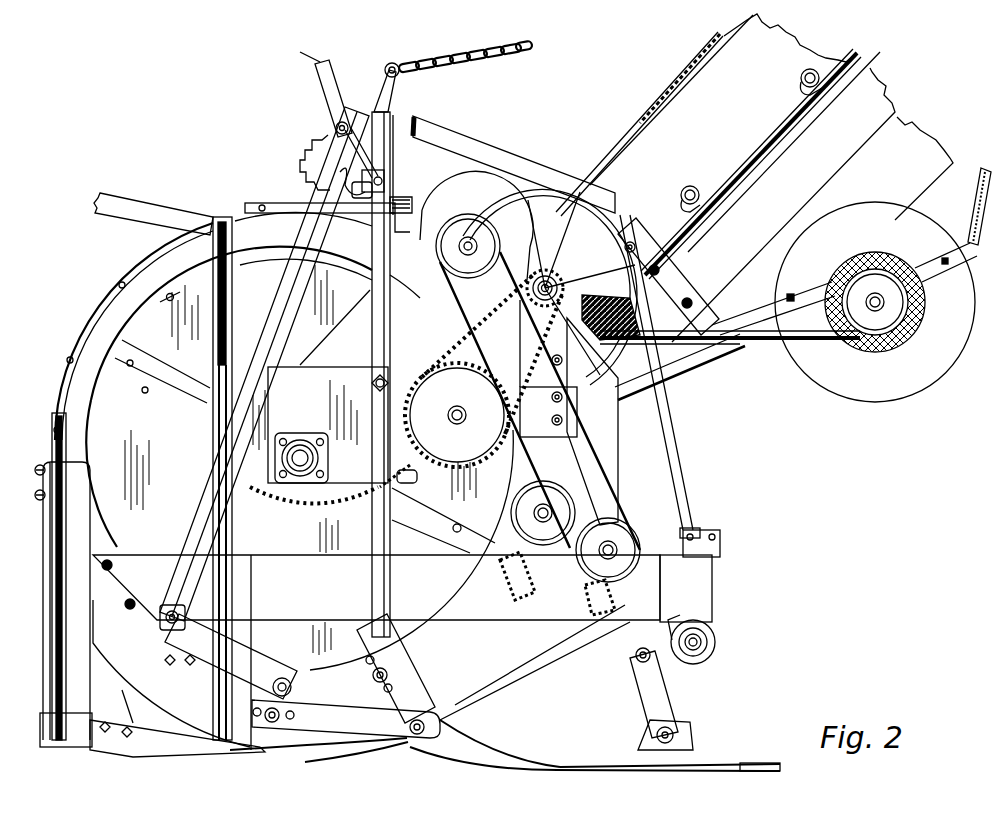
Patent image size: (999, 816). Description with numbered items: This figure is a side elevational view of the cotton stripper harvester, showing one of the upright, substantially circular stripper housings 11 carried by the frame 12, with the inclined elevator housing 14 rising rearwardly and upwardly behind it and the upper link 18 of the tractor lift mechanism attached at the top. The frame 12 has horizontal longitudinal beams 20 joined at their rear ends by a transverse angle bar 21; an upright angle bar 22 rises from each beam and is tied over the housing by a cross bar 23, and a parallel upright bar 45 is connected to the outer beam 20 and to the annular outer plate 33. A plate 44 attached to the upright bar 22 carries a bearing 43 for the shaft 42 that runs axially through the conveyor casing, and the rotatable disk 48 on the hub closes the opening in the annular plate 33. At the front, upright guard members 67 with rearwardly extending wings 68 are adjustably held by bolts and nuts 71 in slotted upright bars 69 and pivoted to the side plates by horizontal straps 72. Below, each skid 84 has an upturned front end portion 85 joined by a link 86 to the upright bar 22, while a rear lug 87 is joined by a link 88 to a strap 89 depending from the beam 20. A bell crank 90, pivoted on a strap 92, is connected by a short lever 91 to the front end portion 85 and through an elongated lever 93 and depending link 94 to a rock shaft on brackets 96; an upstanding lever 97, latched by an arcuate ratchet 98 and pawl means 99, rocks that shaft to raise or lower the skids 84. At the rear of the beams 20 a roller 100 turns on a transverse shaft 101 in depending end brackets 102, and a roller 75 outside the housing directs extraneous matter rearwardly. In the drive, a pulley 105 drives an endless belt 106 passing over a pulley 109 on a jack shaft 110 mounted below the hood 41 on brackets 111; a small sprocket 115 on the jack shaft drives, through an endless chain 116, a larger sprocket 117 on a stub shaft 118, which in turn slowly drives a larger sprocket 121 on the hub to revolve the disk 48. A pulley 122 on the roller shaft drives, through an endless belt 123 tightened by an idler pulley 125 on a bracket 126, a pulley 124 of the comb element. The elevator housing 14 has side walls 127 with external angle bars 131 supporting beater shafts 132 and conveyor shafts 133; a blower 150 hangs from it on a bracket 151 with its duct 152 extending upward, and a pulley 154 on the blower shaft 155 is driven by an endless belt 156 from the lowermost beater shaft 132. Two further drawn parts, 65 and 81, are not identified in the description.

The stripper housing 11 is at (95, 307).
The frame 12 is at (400, 477).
The elevator housing 14 is at (628, 140).
The upper link 18 is at (175, 200).
The beam 20 is at (150, 622).
The transverse angle bar 21 is at (718, 566).
The upright angle bar 22 is at (372, 272).
The cross bar 23 is at (398, 198).
The annular plate 33 is at (88, 327).
The hood 41 is at (455, 180).
The shaft 42 is at (300, 452).
The bearing 43 is at (330, 465).
The plate 44 is at (305, 365).
The upright bar 45 is at (232, 283).
The disk 48 is at (170, 297).
The shield 65 is at (558, 660).
The guard member 67 is at (45, 583).
The wing 68 is at (125, 685).
The upright bar 69 is at (55, 432).
The bolts and nuts 71 is at (42, 470).
The arm 72 is at (170, 745).
The roller 75 is at (600, 552).
The pulley 81 is at (466, 243).
The skid 84 is at (577, 762).
The front end portion 85 is at (462, 752).
The link 86 is at (405, 668).
The lug 87 is at (695, 745).
The link 88 is at (637, 700).
The strap 89 is at (665, 592).
The bell crank 90 is at (280, 636).
The short lever 91 is at (345, 700).
The strap 92 is at (255, 587).
The elongated lever 93 is at (205, 497).
The depending link 94 is at (350, 190).
The bracket 96 is at (385, 175).
The upstanding lever 97 is at (318, 76).
The arcuate ratchet 98 is at (310, 145).
The pawl means 99 is at (338, 100).
The roller 100 is at (715, 640).
The shaft 101 is at (705, 652).
The end bracket 102 is at (715, 645).
The pulley 105 is at (690, 665).
The endless belt 106 is at (668, 400).
The pulley 109 is at (598, 226).
The jack shaft 110 is at (563, 275).
The bracket 111 is at (572, 372).
The small sprocket 115 is at (540, 278).
The endless chain 116 is at (507, 320).
The larger sprocket 117 is at (470, 470).
The stub shaft 118 is at (459, 420).
The larger sprocket 121 is at (300, 505).
The pulley 122 is at (622, 530).
The endless belt 123 is at (552, 462).
The pulley 124 is at (478, 238).
The idler pulley 125 is at (545, 482).
The bracket 126 is at (505, 566).
The side wall 127 is at (782, 40).
The angle bar 131 is at (773, 157).
The beater shaft 132 is at (690, 185).
The conveyor shaft 133 is at (800, 80).
The blower 150 is at (905, 392).
The bracket 151 is at (975, 200).
The duct 152 is at (917, 145).
The pulley 154 is at (905, 303).
The shaft 155 is at (890, 310).
The endless belt 156 is at (772, 346).